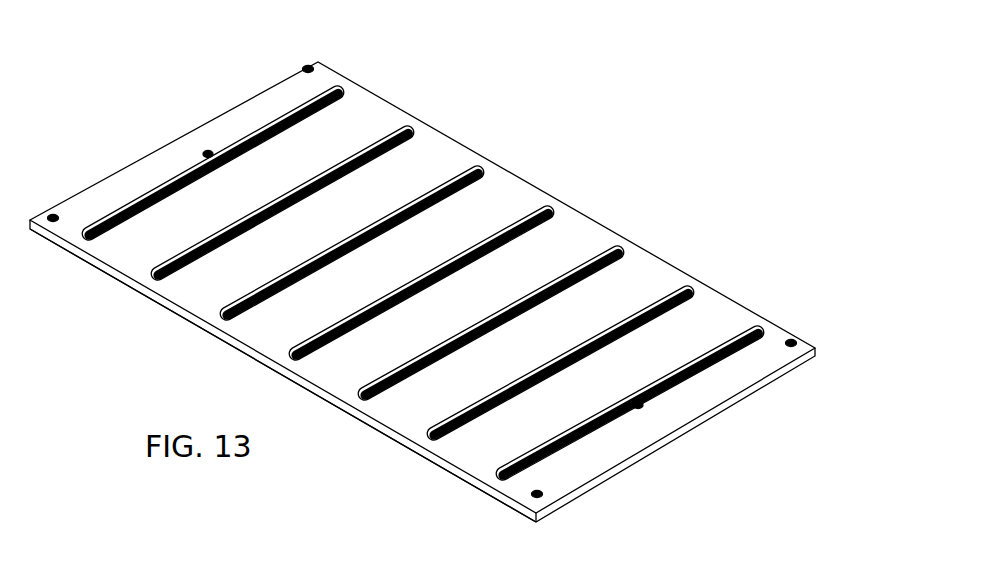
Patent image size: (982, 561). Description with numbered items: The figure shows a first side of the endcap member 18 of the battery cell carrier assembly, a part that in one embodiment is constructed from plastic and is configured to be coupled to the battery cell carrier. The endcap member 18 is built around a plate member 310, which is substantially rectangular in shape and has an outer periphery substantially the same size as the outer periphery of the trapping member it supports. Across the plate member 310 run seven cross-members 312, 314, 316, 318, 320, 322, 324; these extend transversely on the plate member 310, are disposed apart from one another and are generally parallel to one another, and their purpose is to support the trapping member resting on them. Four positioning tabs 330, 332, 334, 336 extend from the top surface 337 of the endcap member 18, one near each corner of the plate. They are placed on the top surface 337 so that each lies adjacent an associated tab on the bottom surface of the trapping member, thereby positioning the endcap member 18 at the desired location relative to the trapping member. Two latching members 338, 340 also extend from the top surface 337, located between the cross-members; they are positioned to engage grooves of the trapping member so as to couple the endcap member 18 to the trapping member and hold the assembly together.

The endcap member 18 is at (603, 175).
The plate member 310 is at (817, 355).
The cross-member 312 is at (213, 180).
The cross-member 314 is at (284, 221).
The cross-member 316 is at (352, 259).
The cross-member 318 is at (422, 299).
The cross-member 320 is at (490, 338).
The cross-member 322 is at (560, 376).
The cross-member 324 is at (588, 443).
The positioning tab 330 is at (52, 212).
The positioning tab 332 is at (308, 64).
The positioning tab 334 is at (537, 488).
The positioning tab 336 is at (792, 338).
The top surface 337 is at (485, 452).
The latching member 338 is at (208, 149).
The latching member 340 is at (638, 400).